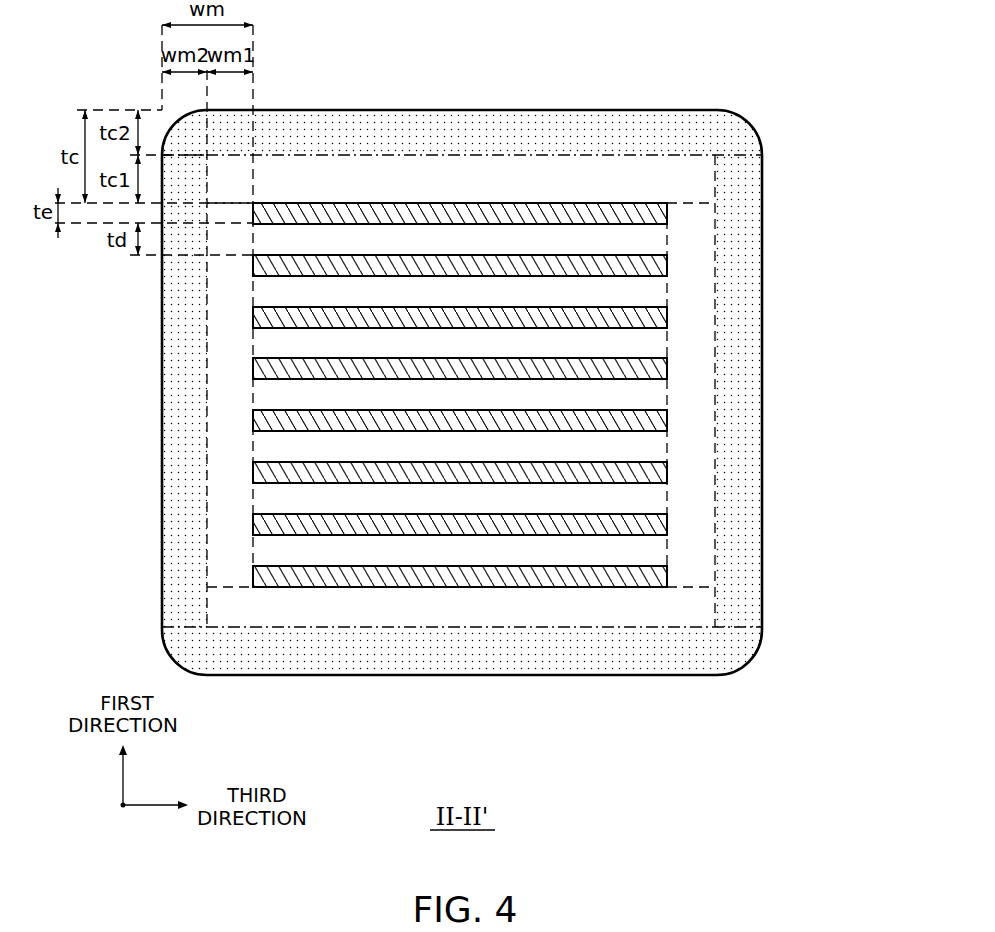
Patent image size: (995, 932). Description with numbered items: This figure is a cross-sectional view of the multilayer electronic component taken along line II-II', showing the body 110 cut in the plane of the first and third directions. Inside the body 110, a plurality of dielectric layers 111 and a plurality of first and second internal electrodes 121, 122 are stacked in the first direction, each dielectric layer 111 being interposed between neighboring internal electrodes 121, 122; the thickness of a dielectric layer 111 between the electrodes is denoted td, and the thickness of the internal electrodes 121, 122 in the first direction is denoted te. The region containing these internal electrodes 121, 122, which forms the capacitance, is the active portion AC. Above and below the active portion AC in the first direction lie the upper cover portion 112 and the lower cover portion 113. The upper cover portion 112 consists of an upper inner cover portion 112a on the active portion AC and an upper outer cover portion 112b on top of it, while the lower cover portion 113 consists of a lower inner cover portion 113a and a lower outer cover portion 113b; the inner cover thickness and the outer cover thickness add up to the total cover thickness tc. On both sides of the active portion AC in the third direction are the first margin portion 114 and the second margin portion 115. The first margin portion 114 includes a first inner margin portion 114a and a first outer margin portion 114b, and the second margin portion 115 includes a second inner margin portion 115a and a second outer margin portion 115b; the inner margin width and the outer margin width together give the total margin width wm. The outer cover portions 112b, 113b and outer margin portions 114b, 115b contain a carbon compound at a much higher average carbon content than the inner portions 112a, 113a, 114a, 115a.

The body 110 is at (645, 108).
The dielectric layer 111 is at (315, 240).
The upper cover portion 112 is at (462, 102).
The upper inner cover portion 112a is at (507, 180).
The upper outer cover portion 112b is at (583, 128).
The lower cover portion 113 is at (462, 689).
The lower inner cover portion 113a is at (510, 605).
The lower outer cover portion 113b is at (583, 657).
The first margin portion 114 is at (139, 326).
The first inner margin portion 114a is at (227, 338).
The first outer margin portion 114b is at (190, 420).
The second margin portion 115 is at (782, 391).
The second inner margin portion 115a is at (695, 340).
The second outer margin portion 115b is at (735, 420).
The first internal electrode 121 is at (382, 210).
The second internal electrode 122 is at (433, 267).
The active portion AC is at (246, 500).